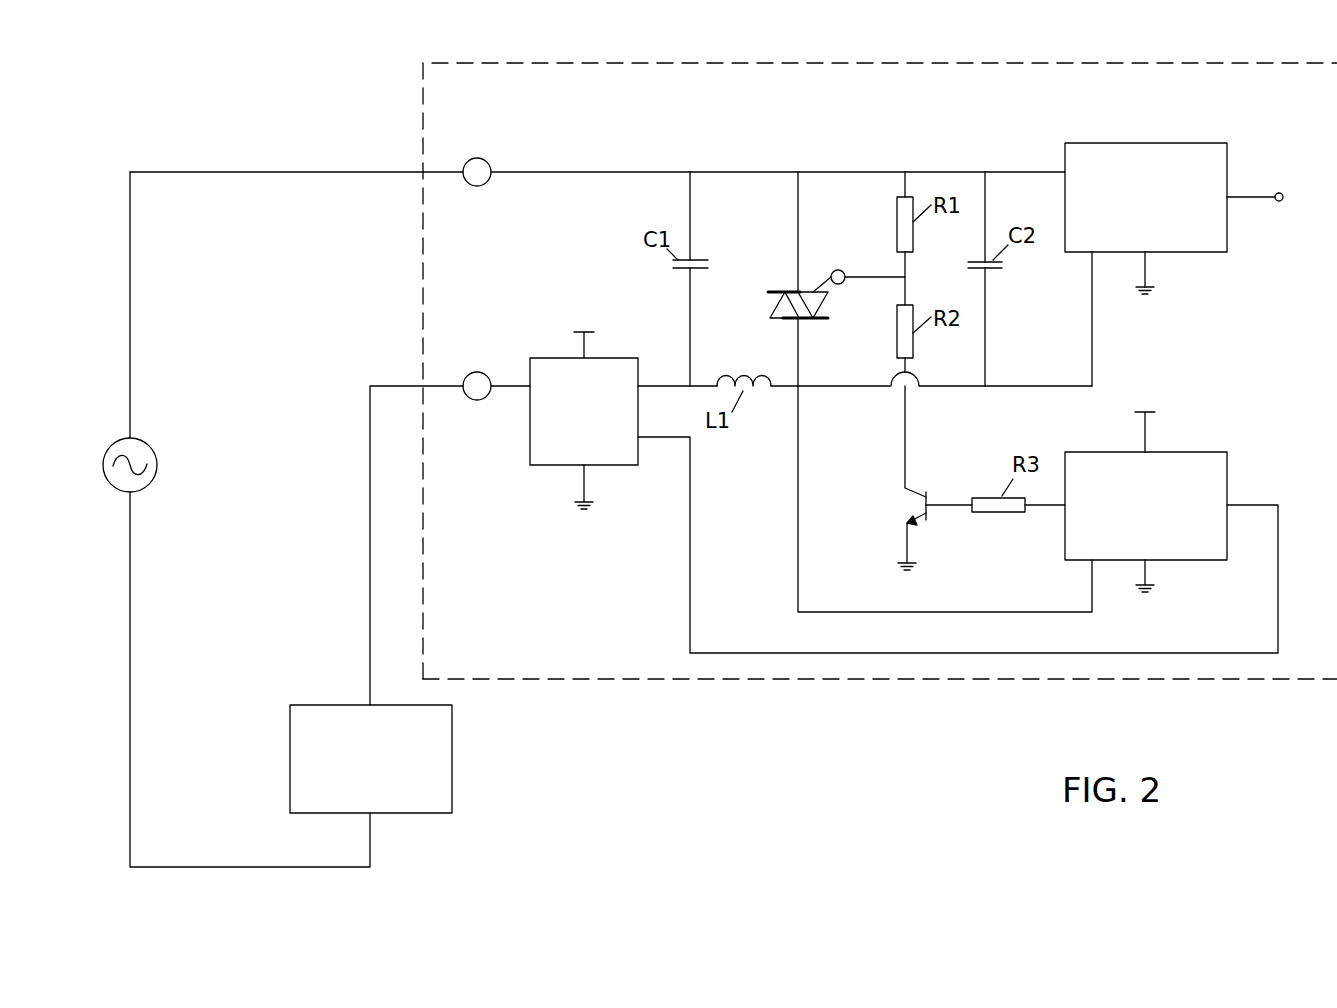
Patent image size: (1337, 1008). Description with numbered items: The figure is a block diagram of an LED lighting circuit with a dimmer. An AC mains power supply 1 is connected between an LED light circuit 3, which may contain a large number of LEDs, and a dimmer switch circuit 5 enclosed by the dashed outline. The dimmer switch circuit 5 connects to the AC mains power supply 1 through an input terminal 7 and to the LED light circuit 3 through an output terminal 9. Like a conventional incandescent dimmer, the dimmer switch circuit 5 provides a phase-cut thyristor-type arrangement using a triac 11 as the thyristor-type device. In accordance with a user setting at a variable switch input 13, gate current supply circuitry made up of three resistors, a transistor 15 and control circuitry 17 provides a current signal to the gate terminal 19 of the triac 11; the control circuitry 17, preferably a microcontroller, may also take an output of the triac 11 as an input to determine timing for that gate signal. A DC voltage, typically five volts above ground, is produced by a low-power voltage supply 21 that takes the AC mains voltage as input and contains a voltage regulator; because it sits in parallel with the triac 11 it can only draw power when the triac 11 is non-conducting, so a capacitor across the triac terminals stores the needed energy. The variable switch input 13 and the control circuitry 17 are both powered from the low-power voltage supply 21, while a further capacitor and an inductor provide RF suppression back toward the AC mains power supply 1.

The AC mains power supply 1 is at (144, 438).
The LED light circuit 3 is at (452, 758).
The dimmer switch circuit 5 is at (892, 681).
The input terminal 7 is at (478, 157).
The output terminal 9 is at (487, 375).
The triac 11 is at (785, 292).
The variable switch input 13 is at (529, 442).
The transistor 15 is at (903, 503).
The control circuitry 17 is at (1200, 452).
The gate terminal 19 is at (842, 271).
The low-power voltage supply 21 is at (1175, 143).